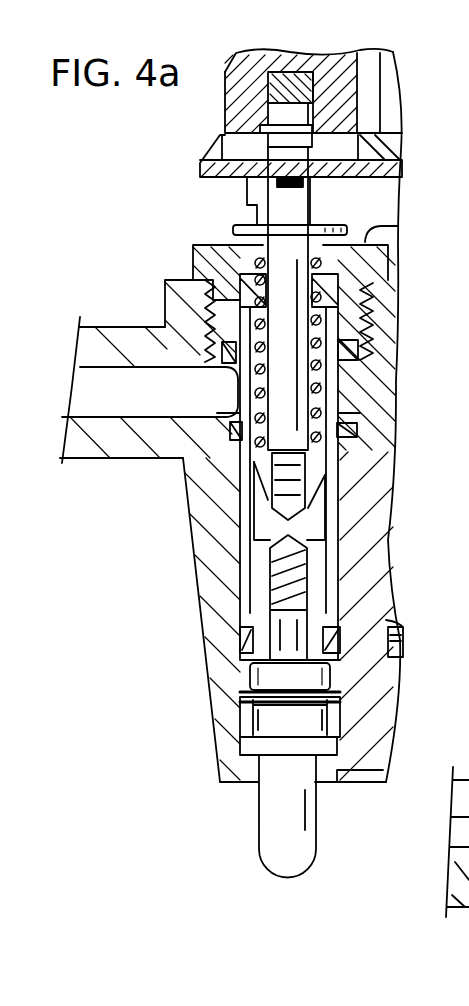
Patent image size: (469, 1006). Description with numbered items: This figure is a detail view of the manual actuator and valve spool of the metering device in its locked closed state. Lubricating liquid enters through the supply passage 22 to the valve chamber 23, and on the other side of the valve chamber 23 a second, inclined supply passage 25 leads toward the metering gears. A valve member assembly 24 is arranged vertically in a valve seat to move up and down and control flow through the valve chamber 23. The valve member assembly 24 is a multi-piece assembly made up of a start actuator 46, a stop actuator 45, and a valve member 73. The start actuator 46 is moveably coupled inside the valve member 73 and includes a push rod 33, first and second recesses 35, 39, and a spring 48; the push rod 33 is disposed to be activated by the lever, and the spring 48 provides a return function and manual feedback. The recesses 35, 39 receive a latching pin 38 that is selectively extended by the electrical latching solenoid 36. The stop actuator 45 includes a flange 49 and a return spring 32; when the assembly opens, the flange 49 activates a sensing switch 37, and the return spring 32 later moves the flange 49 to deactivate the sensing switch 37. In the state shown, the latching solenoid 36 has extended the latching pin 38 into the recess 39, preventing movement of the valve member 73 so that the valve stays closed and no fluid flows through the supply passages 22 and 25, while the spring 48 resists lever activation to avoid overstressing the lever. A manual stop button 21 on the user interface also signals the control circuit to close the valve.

The manual stop button 21 is at (315, 62).
The supply passage 22 is at (95, 392).
The valve chamber 23 is at (240, 487).
The valve member assembly 24 is at (336, 478).
The second inclined supply passage 25 is at (372, 527).
The return spring 32 is at (324, 292).
The push rod 33 is at (290, 863).
The first recess 35 is at (386, 712).
The latching solenoid 36 is at (398, 650).
The sensing switch 37 is at (245, 183).
The latching pin 38 is at (365, 672).
The second recess 39 is at (388, 625).
The stop actuator 45 is at (362, 228).
The start actuator 46 is at (246, 677).
The spring 48 is at (272, 600).
The flange 49 is at (233, 230).
The valve member 73 is at (265, 533).